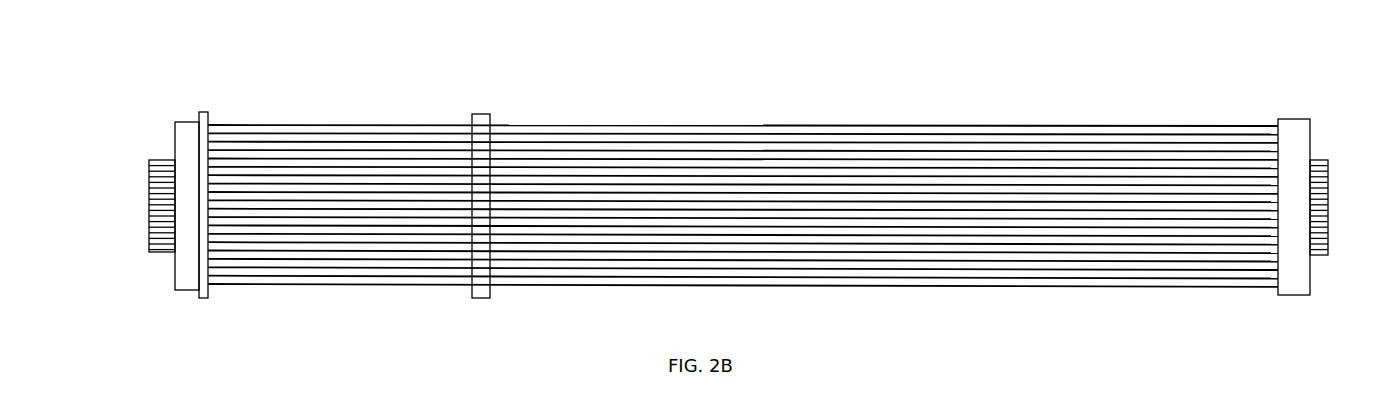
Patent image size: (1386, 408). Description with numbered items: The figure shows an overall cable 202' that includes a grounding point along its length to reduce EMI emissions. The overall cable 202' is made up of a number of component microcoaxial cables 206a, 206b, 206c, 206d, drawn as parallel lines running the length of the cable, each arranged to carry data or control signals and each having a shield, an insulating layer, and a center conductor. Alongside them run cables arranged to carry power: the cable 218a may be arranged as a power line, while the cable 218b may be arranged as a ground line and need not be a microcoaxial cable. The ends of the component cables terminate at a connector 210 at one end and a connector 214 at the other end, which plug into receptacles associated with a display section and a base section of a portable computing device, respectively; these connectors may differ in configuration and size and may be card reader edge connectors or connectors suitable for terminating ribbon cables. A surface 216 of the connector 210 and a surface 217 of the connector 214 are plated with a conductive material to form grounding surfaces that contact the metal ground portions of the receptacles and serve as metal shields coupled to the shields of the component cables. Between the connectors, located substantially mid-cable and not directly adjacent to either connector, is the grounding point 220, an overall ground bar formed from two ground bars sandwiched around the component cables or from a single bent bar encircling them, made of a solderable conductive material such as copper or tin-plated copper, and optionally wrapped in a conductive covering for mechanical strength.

The overall cable 202' is at (717, 261).
The component microcoaxial cable 206a is at (1035, 125).
The component microcoaxial cable 206b is at (1148, 135).
The component microcoaxial cable 206c is at (1155, 262).
The component microcoaxial cable 206d is at (1252, 270).
The power cable 218a is at (972, 253).
The ground line cable 218b is at (1032, 287).
The connector 210 is at (163, 298).
The connector 214 is at (1297, 318).
The surface of connector 216 is at (189, 136).
The surface of connector 217 is at (1295, 135).
The grounding point 220 is at (482, 127).